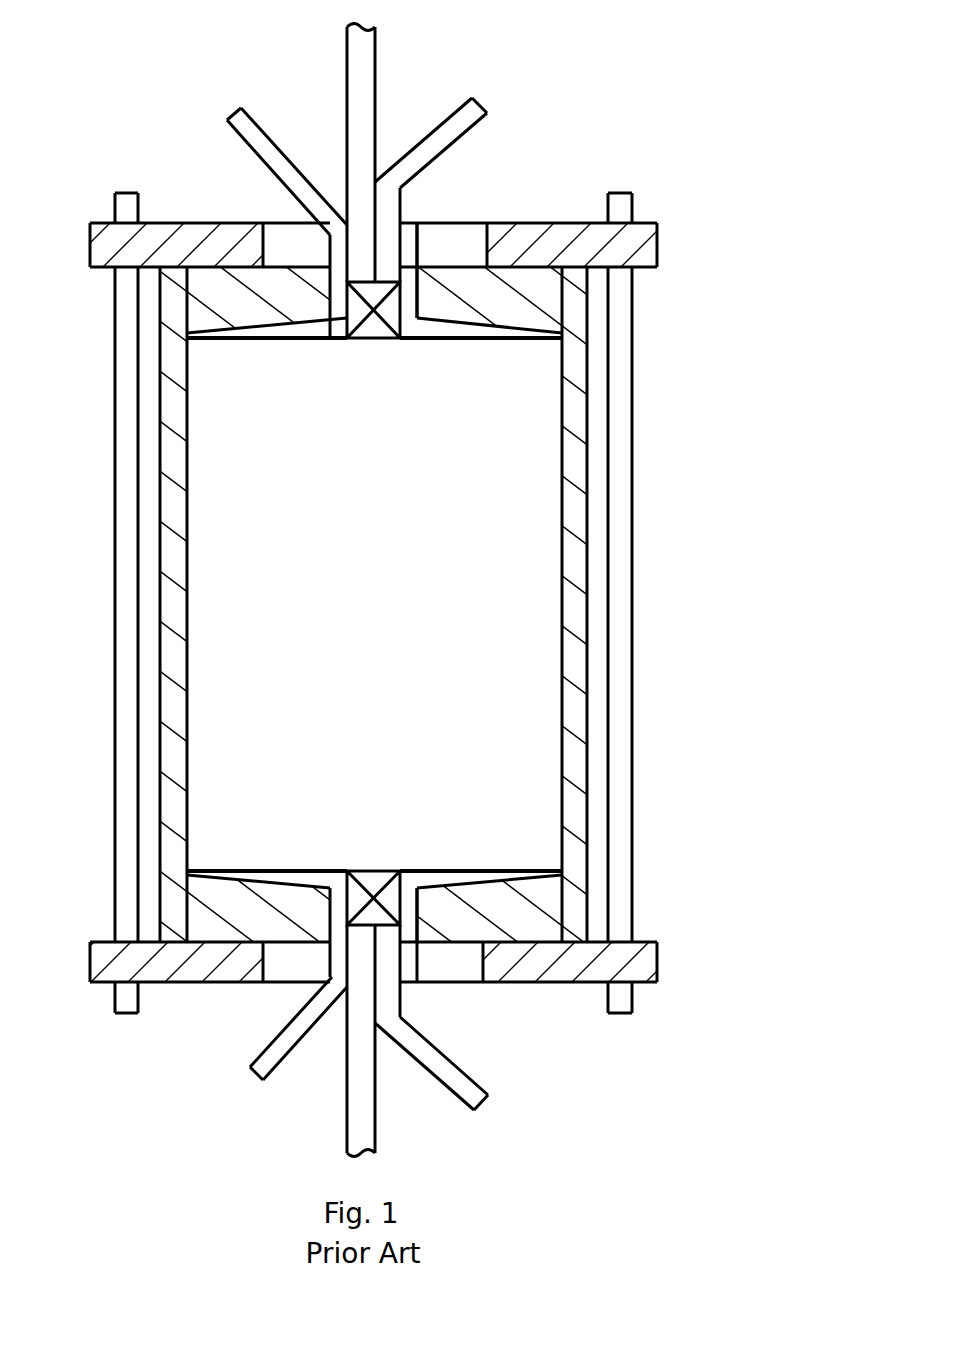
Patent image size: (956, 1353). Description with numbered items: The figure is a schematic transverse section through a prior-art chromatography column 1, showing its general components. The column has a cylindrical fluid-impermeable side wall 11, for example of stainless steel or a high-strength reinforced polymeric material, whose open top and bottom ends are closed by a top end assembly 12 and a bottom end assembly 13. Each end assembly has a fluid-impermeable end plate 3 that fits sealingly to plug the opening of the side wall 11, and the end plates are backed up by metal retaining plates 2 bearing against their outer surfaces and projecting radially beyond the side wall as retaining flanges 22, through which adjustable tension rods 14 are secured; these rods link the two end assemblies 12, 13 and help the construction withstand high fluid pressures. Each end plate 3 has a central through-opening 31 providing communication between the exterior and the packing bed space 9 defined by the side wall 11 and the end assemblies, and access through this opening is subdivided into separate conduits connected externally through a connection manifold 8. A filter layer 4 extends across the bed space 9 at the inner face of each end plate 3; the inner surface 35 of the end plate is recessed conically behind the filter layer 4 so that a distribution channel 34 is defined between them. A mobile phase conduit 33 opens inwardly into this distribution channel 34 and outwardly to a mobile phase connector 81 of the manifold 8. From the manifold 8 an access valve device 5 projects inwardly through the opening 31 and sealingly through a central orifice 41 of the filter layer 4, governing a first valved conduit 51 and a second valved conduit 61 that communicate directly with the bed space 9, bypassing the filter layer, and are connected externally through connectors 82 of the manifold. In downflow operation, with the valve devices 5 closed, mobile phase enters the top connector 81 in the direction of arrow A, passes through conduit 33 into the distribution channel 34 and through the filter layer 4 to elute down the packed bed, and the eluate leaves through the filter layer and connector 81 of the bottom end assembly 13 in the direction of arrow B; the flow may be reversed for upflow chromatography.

The chromatography column 1 is at (703, 532).
The retaining plate 2 is at (520, 228).
The end plate 3 is at (540, 295).
The filter layer 4 is at (280, 338).
The access valve device 5 is at (360, 340).
The connection manifold 8 is at (435, 200).
The packing bed space 9 is at (372, 598).
The side wall 11 is at (587, 492).
The top end assembly 12 is at (675, 273).
The bottom end assembly 13 is at (677, 912).
The tension rod 14 is at (632, 407).
The retaining flange 22 is at (652, 240).
The central through-opening 31 is at (418, 247).
The mobile phase conduit 33 is at (337, 257).
The distribution channel 34 is at (438, 330).
The inner surface 35 is at (488, 337).
The central orifice 41 is at (400, 340).
The first valved conduit 51 is at (387, 975).
The second valved conduit 61 is at (357, 952).
The mobile phase connector 81 is at (262, 135).
The connector 82 is at (455, 112).
The arrow A is at (227, 117).
The arrow B is at (487, 1102).